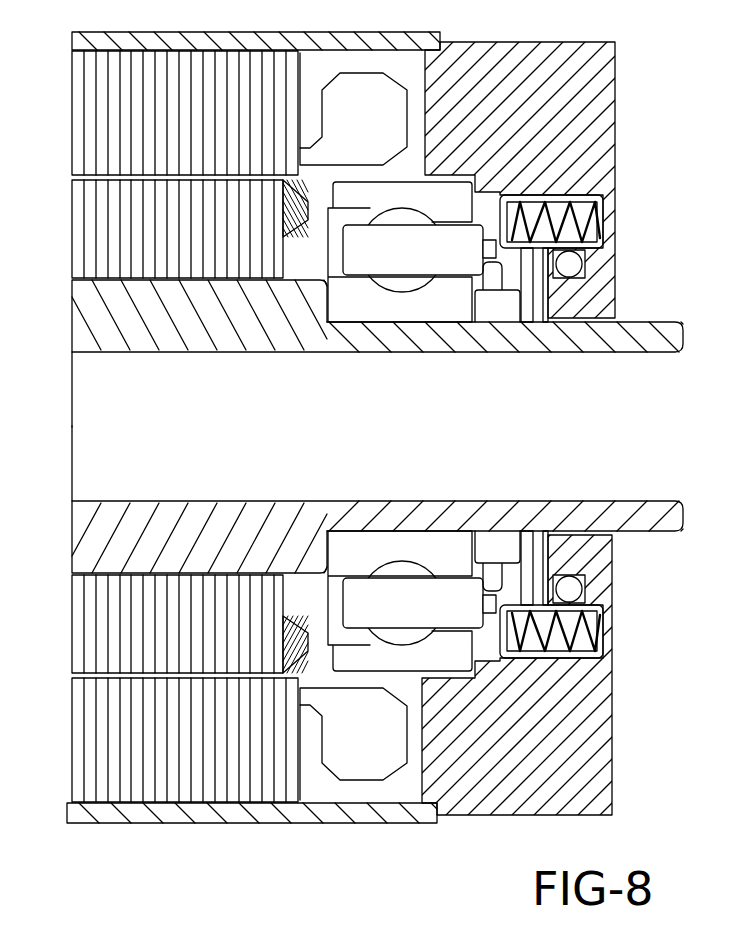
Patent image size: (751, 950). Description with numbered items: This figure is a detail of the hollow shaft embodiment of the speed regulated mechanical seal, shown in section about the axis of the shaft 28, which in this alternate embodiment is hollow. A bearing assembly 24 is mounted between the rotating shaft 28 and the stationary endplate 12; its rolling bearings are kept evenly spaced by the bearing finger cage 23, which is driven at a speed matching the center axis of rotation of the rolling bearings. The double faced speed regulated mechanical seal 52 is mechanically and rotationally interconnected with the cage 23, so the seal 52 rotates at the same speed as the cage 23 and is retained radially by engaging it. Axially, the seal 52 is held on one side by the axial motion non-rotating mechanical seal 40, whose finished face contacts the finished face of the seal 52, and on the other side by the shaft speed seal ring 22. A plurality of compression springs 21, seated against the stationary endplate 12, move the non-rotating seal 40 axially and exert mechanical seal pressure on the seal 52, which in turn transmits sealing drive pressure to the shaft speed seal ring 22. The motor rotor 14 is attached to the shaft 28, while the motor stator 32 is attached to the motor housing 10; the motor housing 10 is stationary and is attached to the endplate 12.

The motor housing 10 is at (340, 815).
The stationary endplate 12 is at (603, 680).
The motor rotor 14 is at (172, 607).
The compression springs 21 is at (598, 227).
The shaft speed seal ring 22 is at (465, 312).
The bearing finger cage 23 is at (419, 426).
The bearing assembly 24 is at (327, 324).
The rotating shaft 28 is at (208, 360).
The motor stator 32 is at (353, 426).
The non-rotating mechanical seal 40 is at (522, 309).
The speed regulated mechanical seal 52 is at (495, 302).